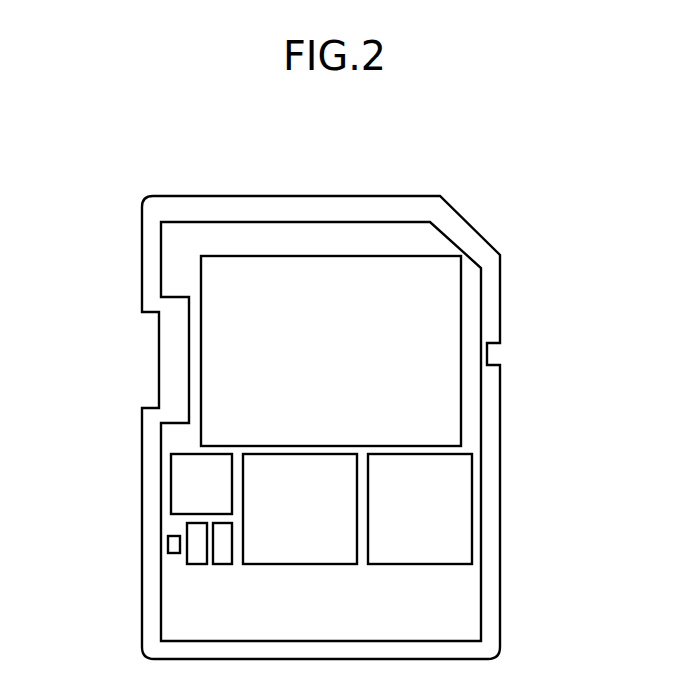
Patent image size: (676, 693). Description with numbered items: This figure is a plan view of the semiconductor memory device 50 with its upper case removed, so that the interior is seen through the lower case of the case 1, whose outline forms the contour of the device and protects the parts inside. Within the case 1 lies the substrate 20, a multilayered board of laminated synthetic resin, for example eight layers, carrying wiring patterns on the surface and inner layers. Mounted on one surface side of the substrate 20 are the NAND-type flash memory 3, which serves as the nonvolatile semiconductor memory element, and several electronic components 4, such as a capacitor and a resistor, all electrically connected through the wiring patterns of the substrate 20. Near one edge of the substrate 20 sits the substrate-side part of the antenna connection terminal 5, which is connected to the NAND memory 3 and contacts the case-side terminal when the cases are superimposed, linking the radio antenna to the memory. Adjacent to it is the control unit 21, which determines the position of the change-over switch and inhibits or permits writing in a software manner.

The semiconductor memory device 50 is at (97, 165).
The case 1 is at (477, 230).
The NAND-type flash memory 3 is at (448, 306).
The electronic components 4 is at (323, 539).
The antenna connection terminal 5 is at (168, 542).
The substrate 20 is at (465, 602).
The control unit 21 is at (198, 565).